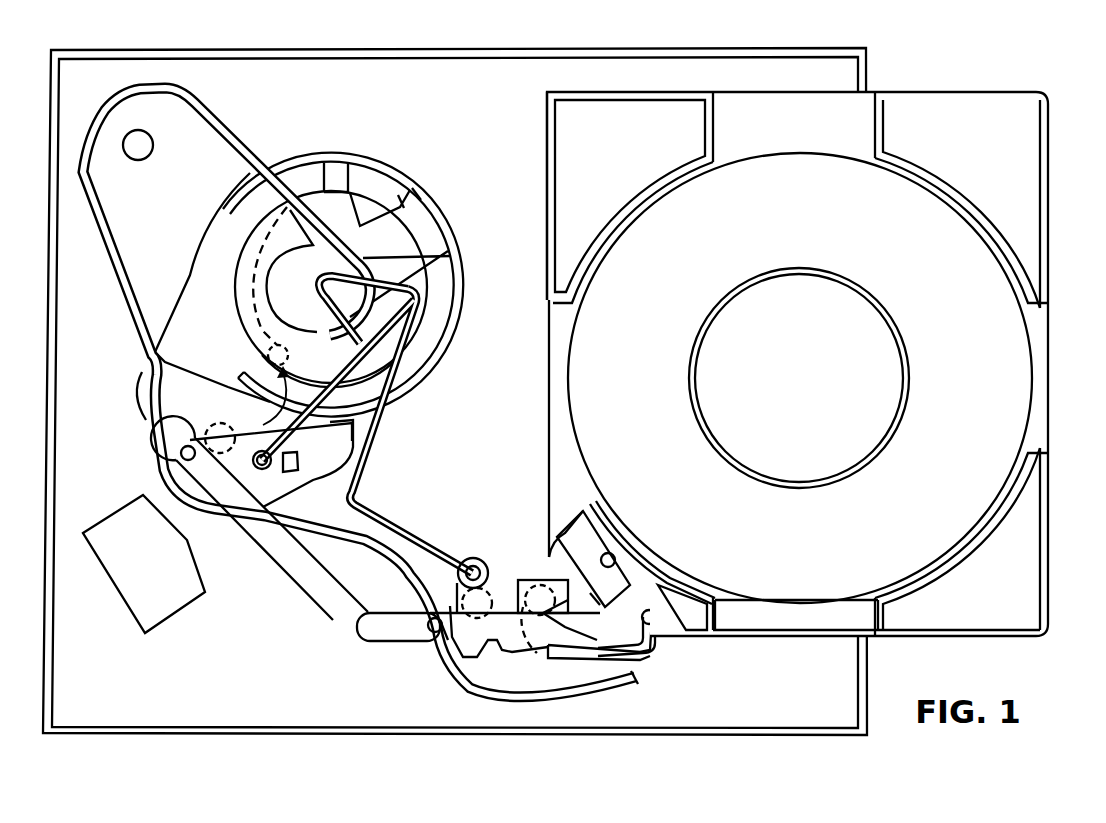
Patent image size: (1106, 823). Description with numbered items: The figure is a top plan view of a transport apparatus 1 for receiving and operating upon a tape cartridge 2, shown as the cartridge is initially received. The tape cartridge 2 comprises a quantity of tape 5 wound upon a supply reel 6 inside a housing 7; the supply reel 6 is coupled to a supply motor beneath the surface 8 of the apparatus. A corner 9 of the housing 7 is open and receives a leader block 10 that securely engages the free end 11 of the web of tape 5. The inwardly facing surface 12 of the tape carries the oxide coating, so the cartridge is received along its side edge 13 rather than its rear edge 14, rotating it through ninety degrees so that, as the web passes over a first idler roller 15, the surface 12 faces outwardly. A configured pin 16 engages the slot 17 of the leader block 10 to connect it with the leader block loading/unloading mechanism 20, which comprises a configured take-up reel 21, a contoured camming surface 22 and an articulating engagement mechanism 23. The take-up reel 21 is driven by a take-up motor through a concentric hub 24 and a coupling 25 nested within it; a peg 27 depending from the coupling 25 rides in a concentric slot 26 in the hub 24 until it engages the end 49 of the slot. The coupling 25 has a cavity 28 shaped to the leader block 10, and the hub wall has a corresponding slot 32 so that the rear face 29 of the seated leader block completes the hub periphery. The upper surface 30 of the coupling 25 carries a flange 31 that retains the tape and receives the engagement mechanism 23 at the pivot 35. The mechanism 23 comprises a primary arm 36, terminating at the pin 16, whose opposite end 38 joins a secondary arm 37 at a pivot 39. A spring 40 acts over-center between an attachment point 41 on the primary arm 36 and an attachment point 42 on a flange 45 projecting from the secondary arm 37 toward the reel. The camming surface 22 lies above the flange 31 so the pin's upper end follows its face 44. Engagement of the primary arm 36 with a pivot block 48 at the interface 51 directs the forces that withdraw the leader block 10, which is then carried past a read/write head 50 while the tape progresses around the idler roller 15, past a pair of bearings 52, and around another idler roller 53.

The transport apparatus 1 is at (312, 50).
The tape cartridge 2 is at (1050, 168).
The tape 5 is at (656, 330).
The supply reel 6 is at (789, 355).
The housing 7 is at (958, 147).
The surface 8 is at (474, 441).
The corner 9 is at (545, 575).
The leader block 10 is at (570, 556).
The free end 11 is at (600, 512).
The inwardly facing surface 12 is at (620, 532).
The side edge 13 is at (545, 175).
The rear edge 14 is at (790, 638).
The first idler roller 15 is at (535, 653).
The configured pin 16 is at (650, 650).
The slot 17 is at (640, 625).
The leader block loading/unloading mechanism 20 is at (364, 495).
The take-up reel 21 is at (416, 180).
The contoured camming surface 22 is at (148, 438).
The articulating engagement mechanism 23 is at (323, 613).
The hub 24 is at (458, 318).
The coupling 25 is at (303, 361).
The slot 26 is at (250, 326).
The peg 27 is at (268, 355).
The cavity 28 is at (373, 251).
The rear face 29 is at (562, 528).
The upper surface 30 is at (208, 245).
The flange 31 is at (137, 395).
The slot 32 is at (446, 222).
The pivot 35 is at (180, 455).
The primary arm 36 is at (495, 640).
The secondary arm 37 is at (285, 560).
The opposite end 38 is at (452, 640).
The pivot 39 is at (428, 628).
The spring 40 is at (372, 512).
The attachment point 41 is at (478, 562).
The attachment point 42 is at (285, 472).
The face 44 is at (388, 533).
The flange 45 is at (345, 443).
The pivot block 48 is at (578, 580).
The end 49 is at (269, 399).
The read/write head 50 is at (130, 573).
The interface 51 is at (566, 603).
The bearings 52 is at (492, 605).
The idler roller 53 is at (152, 145).